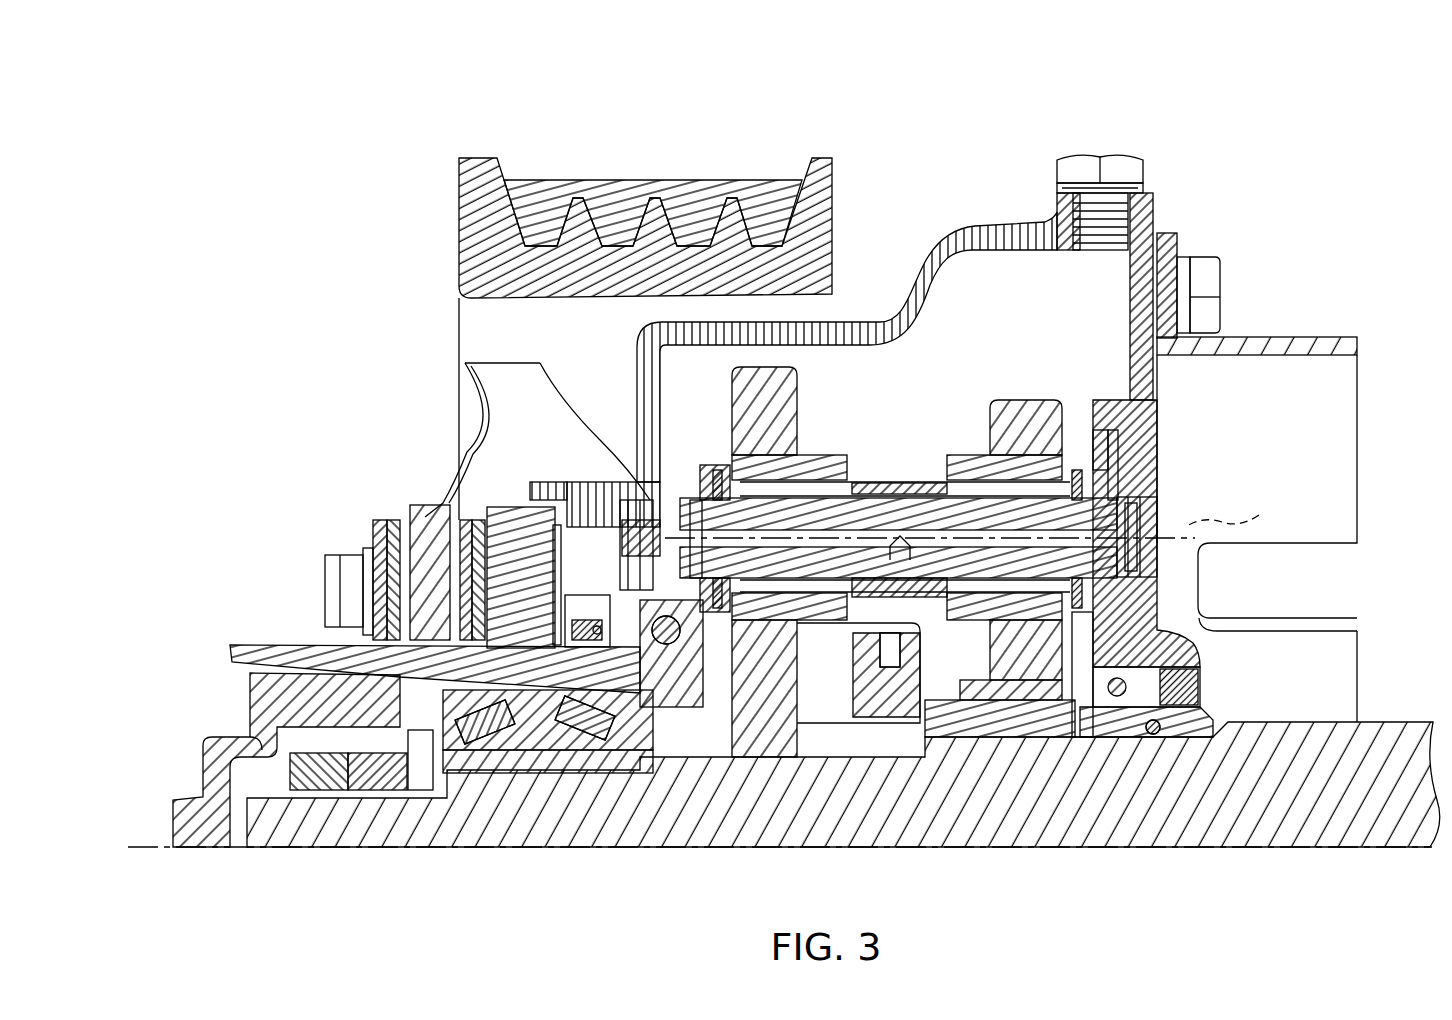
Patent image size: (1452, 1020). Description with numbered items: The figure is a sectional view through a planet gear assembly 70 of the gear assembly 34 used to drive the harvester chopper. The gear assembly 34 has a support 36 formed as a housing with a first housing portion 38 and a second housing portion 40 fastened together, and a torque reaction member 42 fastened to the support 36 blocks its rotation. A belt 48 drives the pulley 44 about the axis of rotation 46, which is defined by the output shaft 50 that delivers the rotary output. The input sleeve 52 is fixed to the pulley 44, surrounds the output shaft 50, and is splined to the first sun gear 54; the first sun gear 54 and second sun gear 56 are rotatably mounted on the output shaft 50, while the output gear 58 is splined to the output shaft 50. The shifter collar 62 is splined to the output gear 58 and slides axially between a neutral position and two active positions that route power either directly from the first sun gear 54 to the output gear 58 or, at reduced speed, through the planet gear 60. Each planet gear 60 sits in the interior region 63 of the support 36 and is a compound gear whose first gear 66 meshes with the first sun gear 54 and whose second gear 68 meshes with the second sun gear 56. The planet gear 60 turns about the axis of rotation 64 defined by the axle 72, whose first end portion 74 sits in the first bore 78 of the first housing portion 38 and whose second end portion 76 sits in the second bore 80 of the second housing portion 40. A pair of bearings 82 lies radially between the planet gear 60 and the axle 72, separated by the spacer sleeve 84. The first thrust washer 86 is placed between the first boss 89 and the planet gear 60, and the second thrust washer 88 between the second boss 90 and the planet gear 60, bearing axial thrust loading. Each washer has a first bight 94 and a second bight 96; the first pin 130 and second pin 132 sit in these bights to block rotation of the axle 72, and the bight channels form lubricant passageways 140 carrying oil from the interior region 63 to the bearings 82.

The gear assembly 34 is at (318, 78).
The support 36 is at (993, 212).
The first housing portion 38 is at (933, 243).
The second housing portion 40 is at (1153, 217).
The torque reaction member 42 is at (1305, 337).
The pulley 44 is at (459, 240).
The axis of rotation 46 is at (437, 850).
The belt 48 is at (550, 180).
The output shaft 50 is at (580, 807).
The input sleeve 52 is at (323, 657).
The first sun gear 54 is at (760, 733).
The second sun gear 56 is at (1018, 715).
The output gear 58 is at (890, 733).
The planet gear 60 is at (861, 443).
The shifter collar 62 is at (880, 680).
The interior region 63 is at (866, 345).
The axis of rotation 64 is at (1239, 507).
The first gear 66 is at (772, 393).
The second gear 68 is at (1000, 430).
The planet gear assembly 70 is at (1035, 382).
The axle 72 is at (890, 516).
The first end portion 74 is at (650, 535).
The second end portion 76 is at (1097, 503).
The first bore 78 is at (640, 600).
The second bore 80 is at (1122, 559).
The bearings 82 is at (812, 476).
The spacer sleeve 84 is at (920, 478).
The first thrust washer 86 is at (705, 462).
The second thrust washer 88 is at (1093, 455).
The first boss 89 is at (700, 470).
The second boss 90 is at (1118, 445).
The first bight 94 is at (1100, 490).
The second bight 96 is at (625, 615).
The first pin 130 is at (700, 545).
The second pin 132 is at (1108, 523).
The lubricant passageway 140 is at (717, 460).